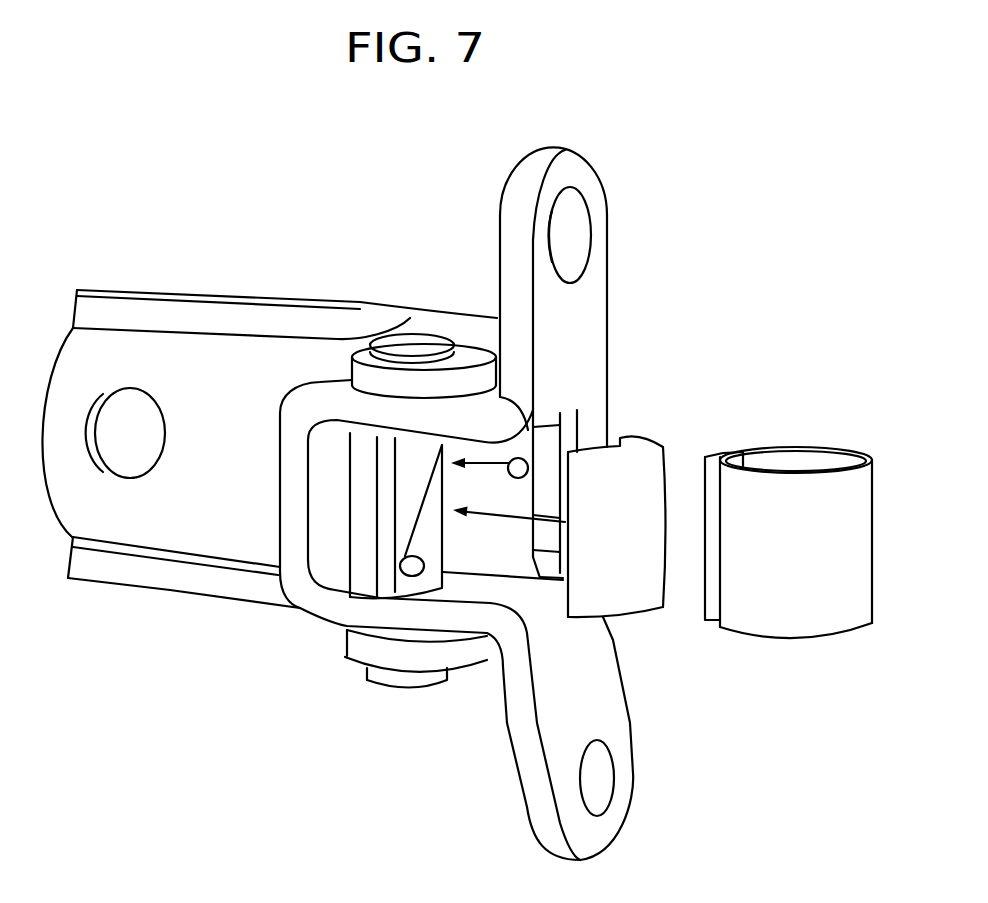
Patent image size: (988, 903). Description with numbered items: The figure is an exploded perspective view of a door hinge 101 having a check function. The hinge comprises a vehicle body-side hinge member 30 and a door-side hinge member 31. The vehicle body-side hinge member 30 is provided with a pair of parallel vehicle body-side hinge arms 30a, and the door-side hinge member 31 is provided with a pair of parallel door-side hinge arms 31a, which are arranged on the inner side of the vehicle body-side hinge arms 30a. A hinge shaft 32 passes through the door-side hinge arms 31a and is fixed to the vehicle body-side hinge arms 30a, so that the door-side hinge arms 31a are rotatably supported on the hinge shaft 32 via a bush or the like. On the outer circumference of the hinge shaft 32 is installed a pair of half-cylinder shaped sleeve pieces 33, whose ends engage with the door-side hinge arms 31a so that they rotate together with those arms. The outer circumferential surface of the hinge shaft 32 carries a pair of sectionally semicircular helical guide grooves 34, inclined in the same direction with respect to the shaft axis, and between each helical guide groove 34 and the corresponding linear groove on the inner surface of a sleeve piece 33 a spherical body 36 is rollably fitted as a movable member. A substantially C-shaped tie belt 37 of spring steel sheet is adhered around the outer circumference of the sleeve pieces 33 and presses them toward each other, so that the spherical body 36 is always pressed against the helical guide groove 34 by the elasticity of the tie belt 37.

The door hinge 101 is at (665, 174).
The vehicle body-side hinge member 30 is at (215, 290).
The vehicle body-side hinge arm 30a is at (341, 362).
The door-side hinge member 31 is at (612, 278).
The door-side hinge arm 31a is at (428, 423).
The hinge shaft 32 is at (412, 342).
The sleeve piece 33 is at (640, 475).
The helical guide groove 34 is at (423, 563).
The spherical body 36 is at (528, 466).
The tie belt 37 is at (788, 603).